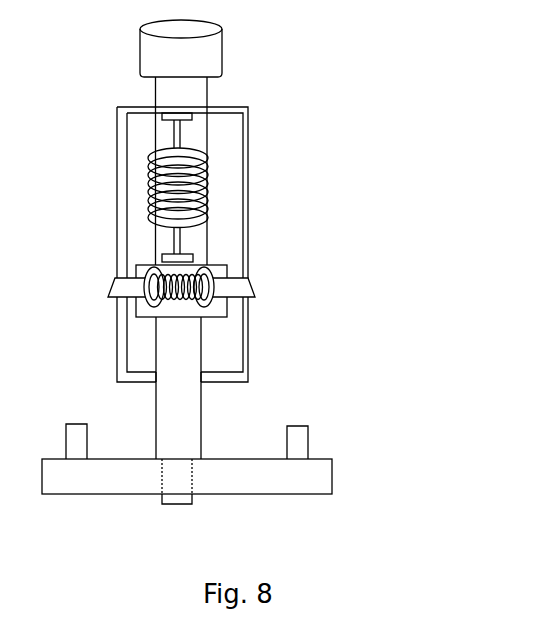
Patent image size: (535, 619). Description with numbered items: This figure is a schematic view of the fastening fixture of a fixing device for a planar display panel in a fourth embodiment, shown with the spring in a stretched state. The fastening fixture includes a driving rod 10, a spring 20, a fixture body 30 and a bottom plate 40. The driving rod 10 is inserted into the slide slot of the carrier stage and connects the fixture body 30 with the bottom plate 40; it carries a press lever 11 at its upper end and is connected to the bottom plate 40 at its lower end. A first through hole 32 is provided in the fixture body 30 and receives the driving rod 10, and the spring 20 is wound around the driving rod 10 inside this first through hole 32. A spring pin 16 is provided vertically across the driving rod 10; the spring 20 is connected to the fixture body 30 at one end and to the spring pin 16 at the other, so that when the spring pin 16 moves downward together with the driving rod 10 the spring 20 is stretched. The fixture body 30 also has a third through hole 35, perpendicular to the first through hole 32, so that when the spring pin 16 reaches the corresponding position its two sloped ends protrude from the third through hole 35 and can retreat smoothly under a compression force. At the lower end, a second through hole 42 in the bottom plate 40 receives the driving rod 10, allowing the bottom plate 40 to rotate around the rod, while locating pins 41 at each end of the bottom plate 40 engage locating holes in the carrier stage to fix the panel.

The driving rod 10 is at (202, 98).
The press lever 11 is at (203, 50).
The spring pin 16 is at (215, 270).
The spring 20 is at (200, 172).
The fixture body 30 is at (235, 132).
The first through hole 32 is at (178, 383).
The third through hole 35 is at (252, 300).
The bottom plate 40 is at (312, 485).
The locating pins 41 is at (298, 452).
The second through hole 42 is at (163, 475).